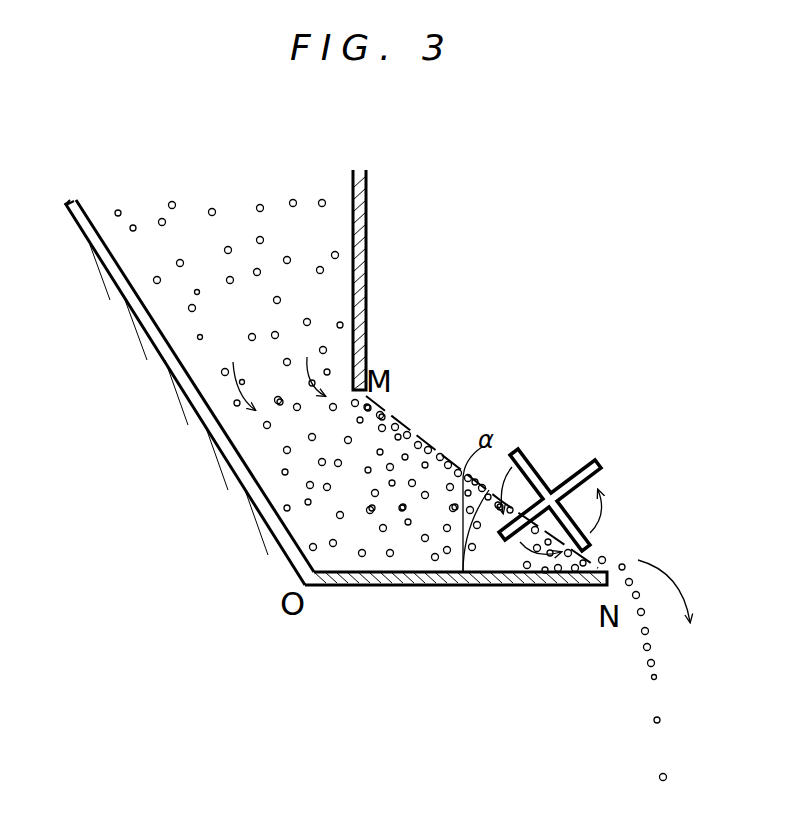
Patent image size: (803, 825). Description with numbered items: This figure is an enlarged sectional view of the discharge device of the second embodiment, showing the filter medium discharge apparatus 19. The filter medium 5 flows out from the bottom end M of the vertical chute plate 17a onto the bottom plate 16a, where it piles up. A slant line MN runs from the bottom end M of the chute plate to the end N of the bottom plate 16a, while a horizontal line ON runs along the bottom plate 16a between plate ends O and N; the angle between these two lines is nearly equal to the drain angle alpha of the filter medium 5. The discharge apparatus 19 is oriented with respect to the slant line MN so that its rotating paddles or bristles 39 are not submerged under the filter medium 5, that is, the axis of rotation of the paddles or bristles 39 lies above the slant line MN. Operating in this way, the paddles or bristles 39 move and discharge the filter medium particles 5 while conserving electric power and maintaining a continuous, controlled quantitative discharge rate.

The filter medium 5 is at (287, 483).
The bottom plate 16a is at (463, 585).
The vertical chute plate 17a is at (368, 298).
The filter medium discharge apparatus 19 is at (557, 478).
The paddles or bristles 39 is at (598, 461).